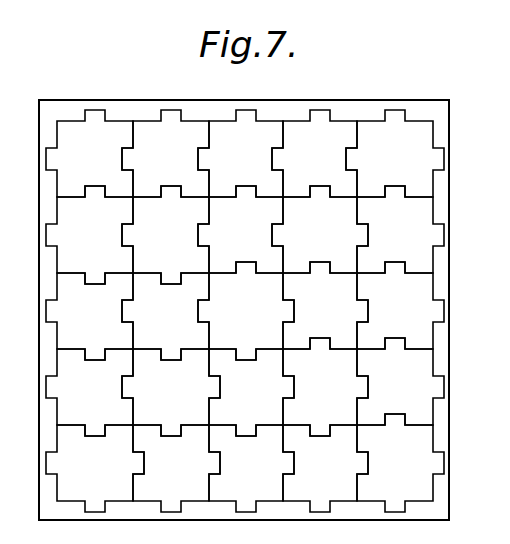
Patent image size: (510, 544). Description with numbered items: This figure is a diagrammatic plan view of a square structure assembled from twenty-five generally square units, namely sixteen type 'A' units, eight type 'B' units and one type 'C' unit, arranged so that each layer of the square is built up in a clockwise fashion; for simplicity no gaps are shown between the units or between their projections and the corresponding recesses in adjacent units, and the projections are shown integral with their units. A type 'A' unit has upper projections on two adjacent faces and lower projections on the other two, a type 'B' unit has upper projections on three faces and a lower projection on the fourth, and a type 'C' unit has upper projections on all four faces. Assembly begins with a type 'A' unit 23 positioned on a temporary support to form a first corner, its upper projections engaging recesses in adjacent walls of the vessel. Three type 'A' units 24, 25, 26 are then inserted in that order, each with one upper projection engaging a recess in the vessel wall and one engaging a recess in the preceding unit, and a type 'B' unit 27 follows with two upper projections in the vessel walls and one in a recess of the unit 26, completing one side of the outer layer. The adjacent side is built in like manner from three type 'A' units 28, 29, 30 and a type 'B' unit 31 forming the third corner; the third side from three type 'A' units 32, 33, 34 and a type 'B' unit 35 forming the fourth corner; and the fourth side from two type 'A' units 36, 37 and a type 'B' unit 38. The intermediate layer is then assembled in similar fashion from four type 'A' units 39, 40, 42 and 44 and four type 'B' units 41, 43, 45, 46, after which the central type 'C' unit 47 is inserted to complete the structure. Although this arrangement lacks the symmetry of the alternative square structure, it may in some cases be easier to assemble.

The type 'A' unit 23 is at (107, 171).
The type 'A' unit 24 is at (183, 171).
The type 'A' unit 25 is at (258, 171).
The type 'A' unit 26 is at (332, 171).
The type 'B' unit 27 is at (407, 171).
The type 'B' unit 38 is at (107, 247).
The type 'A' unit 39 is at (183, 247).
The type 'A' unit 40 is at (258, 247).
The type 'B' unit 41 is at (332, 247).
The type 'A' unit 28 is at (407, 247).
The type 'A' unit 37 is at (107, 323).
The type 'B' unit 46 is at (183, 323).
The type 'C' unit 47 is at (258, 323).
The type 'A' unit 42 is at (332, 323).
The type 'A' unit 29 is at (407, 323).
The type 'A' unit 36 is at (107, 399).
The type 'B' unit 45 is at (183, 399).
The type 'A' unit 44 is at (258, 399).
The type 'B' unit 43 is at (332, 399).
The type 'A' unit 30 is at (407, 399).
The type 'B' unit 35 is at (107, 475).
The type 'A' unit 34 is at (183, 475).
The type 'A' unit 33 is at (258, 475).
The type 'A' unit 32 is at (332, 475).
The type 'B' unit 31 is at (407, 475).